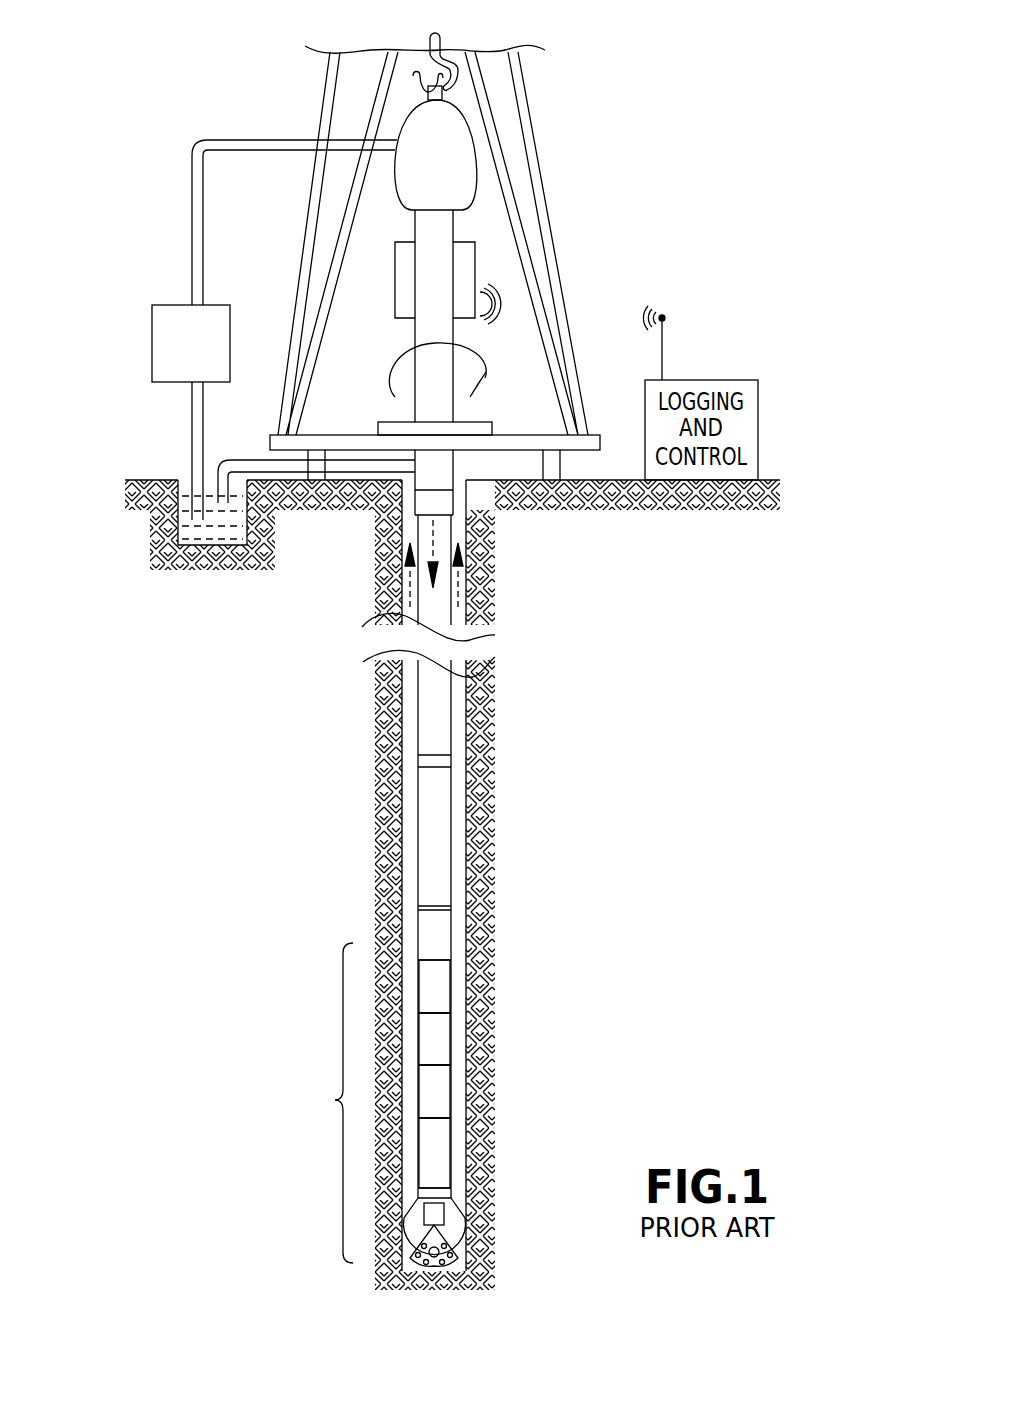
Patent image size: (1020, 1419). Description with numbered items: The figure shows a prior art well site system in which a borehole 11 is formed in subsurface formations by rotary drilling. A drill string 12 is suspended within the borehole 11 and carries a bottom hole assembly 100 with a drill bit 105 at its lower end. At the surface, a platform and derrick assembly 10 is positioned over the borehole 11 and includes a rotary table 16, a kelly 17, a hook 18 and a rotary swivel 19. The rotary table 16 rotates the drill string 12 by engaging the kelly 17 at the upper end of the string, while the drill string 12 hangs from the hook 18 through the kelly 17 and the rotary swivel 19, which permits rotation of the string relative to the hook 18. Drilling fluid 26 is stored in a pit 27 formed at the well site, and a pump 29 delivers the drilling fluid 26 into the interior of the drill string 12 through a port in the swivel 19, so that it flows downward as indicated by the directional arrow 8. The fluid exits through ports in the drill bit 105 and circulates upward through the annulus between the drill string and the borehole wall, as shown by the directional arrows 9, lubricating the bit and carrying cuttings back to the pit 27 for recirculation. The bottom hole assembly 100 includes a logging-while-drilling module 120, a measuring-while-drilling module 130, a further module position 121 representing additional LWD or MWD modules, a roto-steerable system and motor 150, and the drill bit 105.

The platform and derrick assembly 10 is at (575, 132).
The hook 18 is at (430, 38).
The rotary swivel 19 is at (406, 183).
The kelly 17 is at (433, 330).
The rotary table 16 is at (490, 421).
The drill string 12 is at (426, 482).
The borehole 11 is at (472, 478).
The pump 29 is at (231, 348).
The pit 27 is at (180, 478).
The drilling fluid 26 is at (217, 537).
The directional arrows 9 is at (407, 558).
The directional arrow 8 is at (432, 573).
The bottom hole assembly 100 is at (427, 1104).
The logging-while-drilling module 120 is at (437, 984).
The measuring-while-drilling module 130 is at (440, 1040).
The LWD and/or MWD module 121 is at (437, 1088).
The roto-steerable system and motor 150 is at (433, 1150).
The drill bit 105 is at (457, 1226).